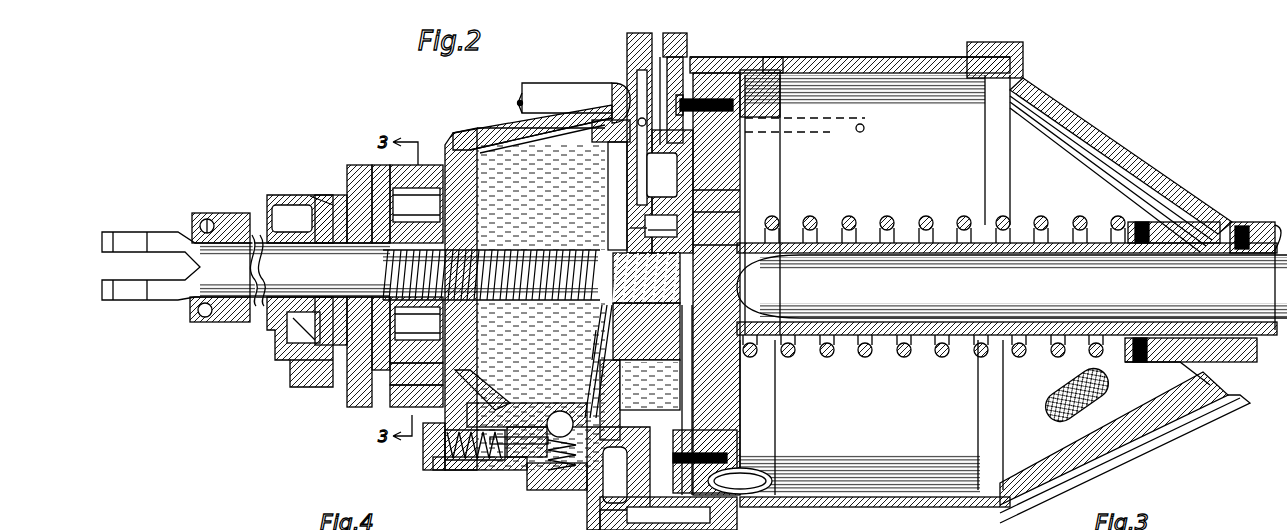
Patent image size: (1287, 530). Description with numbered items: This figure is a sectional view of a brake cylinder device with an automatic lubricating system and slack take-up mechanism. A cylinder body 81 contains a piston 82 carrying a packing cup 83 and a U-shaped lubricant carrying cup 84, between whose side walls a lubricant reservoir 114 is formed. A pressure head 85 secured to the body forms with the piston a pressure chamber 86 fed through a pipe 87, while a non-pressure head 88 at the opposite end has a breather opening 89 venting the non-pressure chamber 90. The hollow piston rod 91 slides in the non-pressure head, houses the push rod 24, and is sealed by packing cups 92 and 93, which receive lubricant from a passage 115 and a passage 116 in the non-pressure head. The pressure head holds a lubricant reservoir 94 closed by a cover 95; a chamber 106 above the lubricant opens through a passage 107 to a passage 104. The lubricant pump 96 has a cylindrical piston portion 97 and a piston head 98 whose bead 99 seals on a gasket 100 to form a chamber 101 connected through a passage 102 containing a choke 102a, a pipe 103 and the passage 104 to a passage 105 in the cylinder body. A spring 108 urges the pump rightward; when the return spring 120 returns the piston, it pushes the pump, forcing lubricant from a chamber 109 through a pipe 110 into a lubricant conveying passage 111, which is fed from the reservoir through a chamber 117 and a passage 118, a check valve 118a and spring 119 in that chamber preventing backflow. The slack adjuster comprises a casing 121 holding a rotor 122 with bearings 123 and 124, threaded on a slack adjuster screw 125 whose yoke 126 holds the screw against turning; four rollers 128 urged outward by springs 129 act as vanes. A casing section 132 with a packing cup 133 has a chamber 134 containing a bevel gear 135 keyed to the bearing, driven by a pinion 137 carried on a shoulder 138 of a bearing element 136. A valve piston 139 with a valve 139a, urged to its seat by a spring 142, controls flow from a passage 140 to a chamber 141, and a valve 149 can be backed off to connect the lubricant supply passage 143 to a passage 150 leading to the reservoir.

The brake cylinder push rod 24 is at (910, 290).
The cylinder body 81 is at (822, 58).
The piston 82 is at (705, 95).
The packing cup 83 is at (680, 65).
The lubricant carrying cup 84 is at (770, 60).
The pressure head 85 is at (630, 38).
The pressure chamber 86 is at (642, 68).
The pipe 87 is at (568, 92).
The non-pressure head 88 is at (1030, 85).
The breather opening 89 is at (1090, 410).
The non-pressure chamber 90 is at (845, 90).
The hollow piston rod 91 is at (945, 242).
The packing cup 92 is at (1245, 222).
The packing cup 93 is at (1115, 240).
The lubricant reservoir 94 is at (470, 140).
The cover 95 is at (510, 140).
The lubricant pump 96 is at (716, 238).
The cylindrical piston portion 97 is at (646, 306).
The piston head 98 is at (716, 188).
The bead 99 is at (716, 284).
The gasket 100 is at (658, 231).
The chamber 101 is at (716, 208).
The passage 102 is at (658, 218).
The choke 102a is at (645, 228).
The pipe 103 is at (661, 175).
The passage 104 is at (630, 150).
The passage 105 is at (828, 130).
The chamber 106 is at (540, 145).
The passage 107 is at (608, 140).
The spring 108 is at (610, 303).
The chamber 109 is at (598, 318).
The pipe 110 is at (640, 400).
The lubricant conveying passage 111 is at (605, 470).
The lubricant reservoir 114 is at (742, 470).
The passage 115 is at (1078, 473).
The passage 116 is at (1215, 350).
The chamber 117 is at (540, 490).
The passage 118 is at (565, 405).
The check valve 118a is at (520, 445).
The spring 119 is at (555, 437).
The return spring 120 is at (855, 230).
The casing 121 is at (358, 168).
The rotor 122 is at (468, 215).
The bearing 123 is at (470, 246).
The bearing 124 is at (335, 198).
The slack adjuster screw 125 is at (508, 303).
The yoke 126 is at (198, 268).
The roller 128 is at (428, 188).
The spring 129 is at (392, 162).
The casing section 132 is at (305, 200).
The packing cup 133 is at (202, 308).
The chamber 134 is at (312, 197).
The bevel gear 135 is at (330, 220).
The bearing element 136 is at (283, 365).
The pinion 137 is at (288, 320).
The shoulder 138 is at (293, 380).
The valve piston 139 is at (445, 462).
The valve 139a is at (527, 406).
The passage 140 is at (520, 455).
The chamber 141 is at (470, 470).
The spring 142 is at (425, 448).
The lubricant supply passage 143 is at (500, 382).
The valve 149 is at (390, 373).
The passage 150 is at (395, 395).